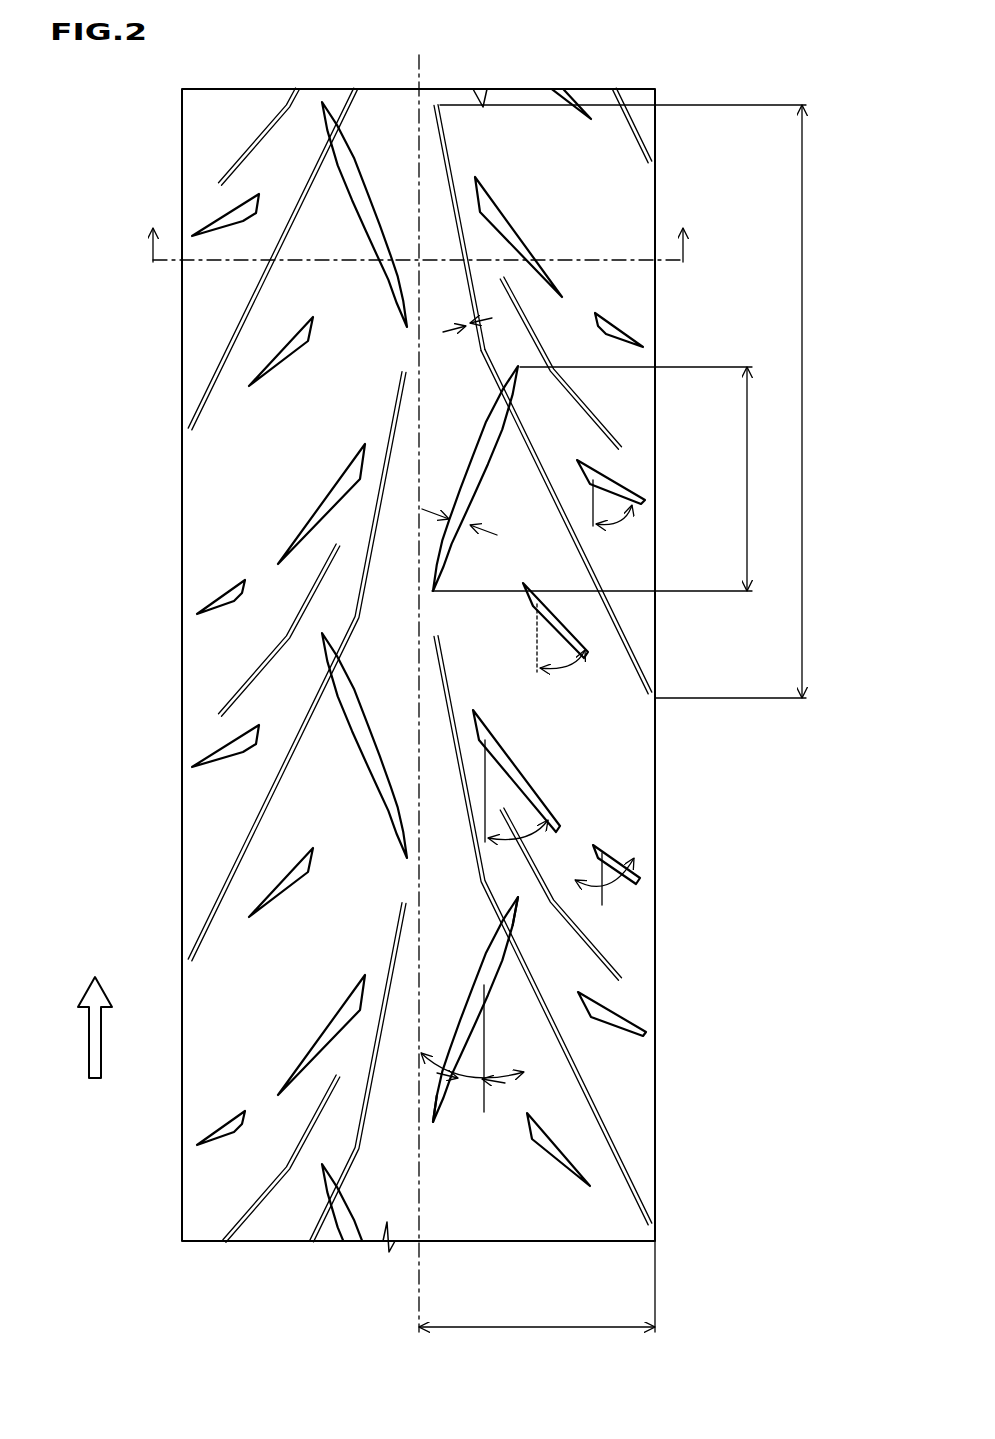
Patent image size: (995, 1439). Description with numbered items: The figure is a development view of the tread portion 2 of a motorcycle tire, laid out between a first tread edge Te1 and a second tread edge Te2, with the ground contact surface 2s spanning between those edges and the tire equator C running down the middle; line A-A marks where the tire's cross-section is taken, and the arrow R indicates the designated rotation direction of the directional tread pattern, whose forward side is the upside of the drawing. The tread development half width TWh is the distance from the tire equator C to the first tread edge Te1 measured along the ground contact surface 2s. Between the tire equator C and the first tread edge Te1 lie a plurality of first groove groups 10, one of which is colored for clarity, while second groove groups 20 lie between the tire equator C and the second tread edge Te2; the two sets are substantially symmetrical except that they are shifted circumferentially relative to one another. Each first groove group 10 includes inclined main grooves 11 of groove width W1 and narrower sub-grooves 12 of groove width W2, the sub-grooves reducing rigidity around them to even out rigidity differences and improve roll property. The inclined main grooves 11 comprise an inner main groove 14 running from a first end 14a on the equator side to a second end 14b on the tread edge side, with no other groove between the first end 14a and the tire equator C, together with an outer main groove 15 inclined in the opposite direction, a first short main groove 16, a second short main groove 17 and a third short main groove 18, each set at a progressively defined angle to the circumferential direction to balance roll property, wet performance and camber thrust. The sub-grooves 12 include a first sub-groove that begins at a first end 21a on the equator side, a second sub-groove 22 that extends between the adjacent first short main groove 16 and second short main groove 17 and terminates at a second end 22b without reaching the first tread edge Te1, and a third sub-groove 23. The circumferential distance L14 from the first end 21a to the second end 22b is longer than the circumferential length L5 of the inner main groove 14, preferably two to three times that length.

The tread portion 2 is at (380, 133).
The ground contact surface 2s is at (521, 135).
The first end of the first sub-groove 21a is at (482, 100).
The first groove group 10 is at (508, 1006).
The inclined main groove 11 is at (500, 960).
The sub-groove 12 is at (462, 268).
The inner main groove 14 is at (495, 423).
The first end of the inner main groove 14a is at (432, 1124).
The second end of the inner main groove 14b is at (518, 897).
The outer main groove 15 is at (533, 792).
The first short main groove 16 is at (568, 636).
The second short main groove 17 is at (612, 490).
The third short main groove 18 is at (602, 860).
The second groove group 20 is at (340, 788).
The second sub-groove 22 is at (593, 580).
The second end of the second sub-groove 22b is at (650, 698).
The third sub-groove 23 is at (540, 302).
The tire equator C is at (418, 683).
The line A- A is at (418, 231).
The rotation direction R is at (95, 1014).
The first tread edge Te1 is at (656, 150).
The second tread edge Te2 is at (181, 152).
The groove width of the inclined main grooves W1 is at (473, 507).
The groove width of the sub-grooves W2 is at (502, 290).
The circumferential distance L14 is at (647, 401).
The circumferential length of the inner main groove L5 is at (609, 479).
The tread development half width TWh is at (537, 1286).